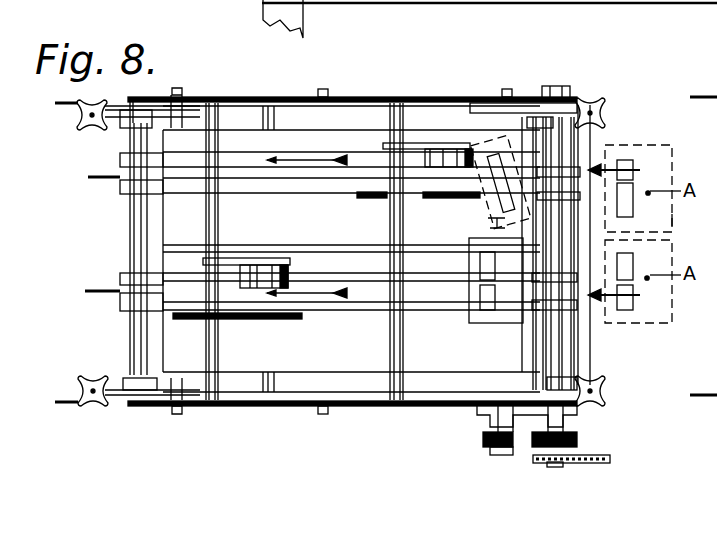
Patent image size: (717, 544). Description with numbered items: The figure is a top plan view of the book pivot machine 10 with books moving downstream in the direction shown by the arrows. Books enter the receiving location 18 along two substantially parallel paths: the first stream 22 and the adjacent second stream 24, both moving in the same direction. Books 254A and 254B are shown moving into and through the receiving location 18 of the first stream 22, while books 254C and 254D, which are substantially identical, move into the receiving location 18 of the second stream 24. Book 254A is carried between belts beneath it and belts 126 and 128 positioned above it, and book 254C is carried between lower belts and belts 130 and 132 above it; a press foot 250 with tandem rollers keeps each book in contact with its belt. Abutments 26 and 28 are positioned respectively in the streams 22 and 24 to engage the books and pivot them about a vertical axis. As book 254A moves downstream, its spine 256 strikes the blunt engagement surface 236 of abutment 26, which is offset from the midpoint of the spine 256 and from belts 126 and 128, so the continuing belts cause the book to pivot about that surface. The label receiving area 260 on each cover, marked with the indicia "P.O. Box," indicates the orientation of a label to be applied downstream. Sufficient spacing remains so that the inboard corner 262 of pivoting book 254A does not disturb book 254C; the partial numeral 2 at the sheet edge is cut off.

The book pivot machine 10 is at (597, 88).
The receiving location 18 is at (568, 170).
The first stream 22 is at (292, 161).
The second stream 24 is at (300, 290).
The abutment 26 is at (411, 198).
The abutment 28 is at (245, 320).
The belt 126 is at (252, 152).
The belt 128 is at (302, 186).
The belt 130 is at (350, 277).
The belt 132 is at (331, 308).
The blunt engagement surface 236 is at (490, 202).
The press foot 250 is at (453, 147).
The book 254A is at (487, 150).
The book 254B is at (645, 150).
The book 254C is at (490, 324).
The book 254D is at (650, 323).
The spine 256 is at (598, 147).
The label receiving area 260 is at (648, 180).
The inboard corner 262 is at (495, 221).
The adjacent unit (partial) 2 is at (672, 222).